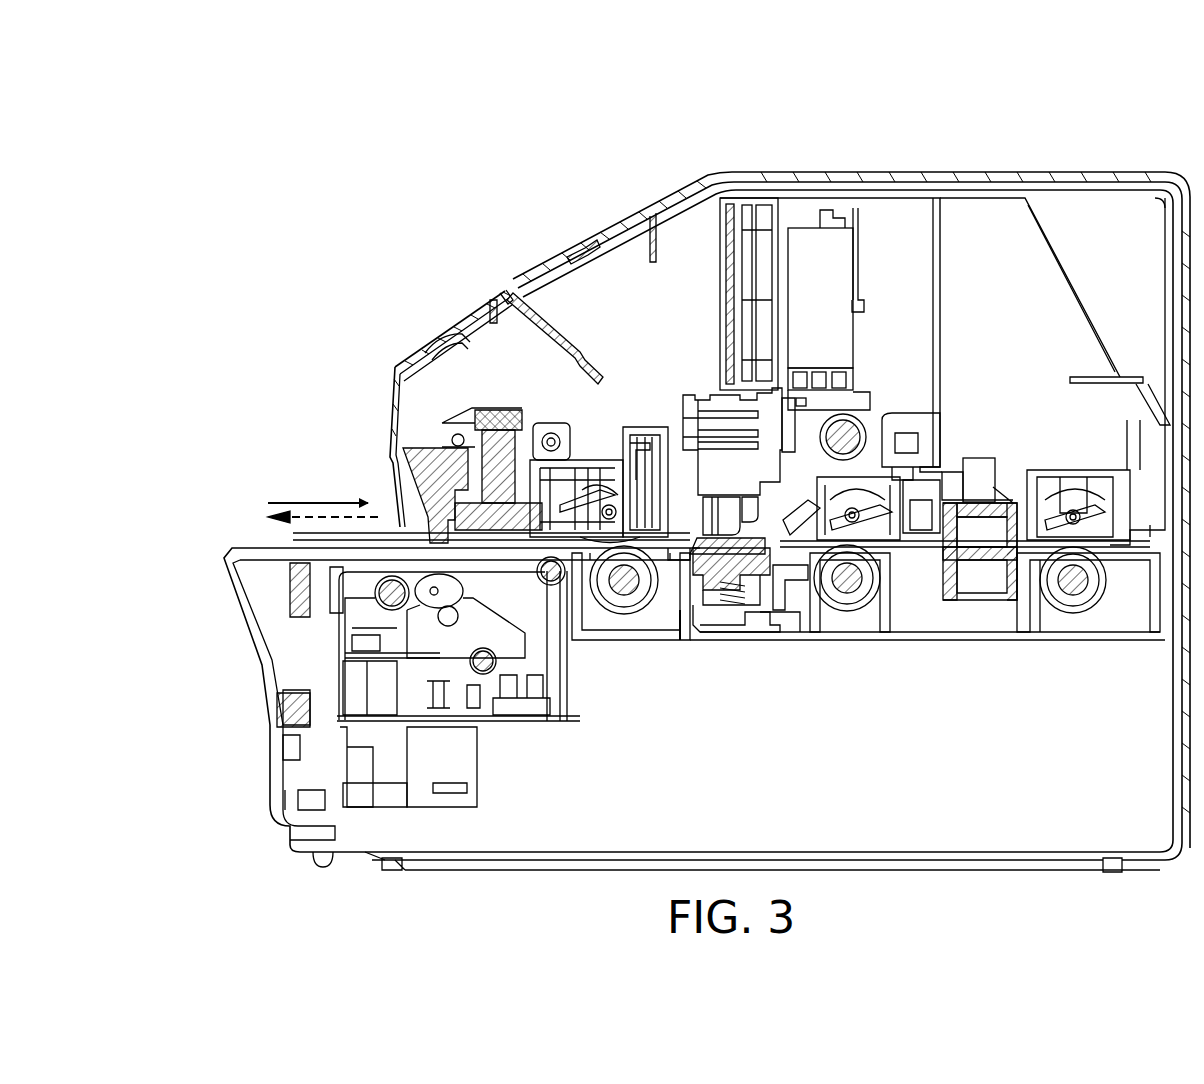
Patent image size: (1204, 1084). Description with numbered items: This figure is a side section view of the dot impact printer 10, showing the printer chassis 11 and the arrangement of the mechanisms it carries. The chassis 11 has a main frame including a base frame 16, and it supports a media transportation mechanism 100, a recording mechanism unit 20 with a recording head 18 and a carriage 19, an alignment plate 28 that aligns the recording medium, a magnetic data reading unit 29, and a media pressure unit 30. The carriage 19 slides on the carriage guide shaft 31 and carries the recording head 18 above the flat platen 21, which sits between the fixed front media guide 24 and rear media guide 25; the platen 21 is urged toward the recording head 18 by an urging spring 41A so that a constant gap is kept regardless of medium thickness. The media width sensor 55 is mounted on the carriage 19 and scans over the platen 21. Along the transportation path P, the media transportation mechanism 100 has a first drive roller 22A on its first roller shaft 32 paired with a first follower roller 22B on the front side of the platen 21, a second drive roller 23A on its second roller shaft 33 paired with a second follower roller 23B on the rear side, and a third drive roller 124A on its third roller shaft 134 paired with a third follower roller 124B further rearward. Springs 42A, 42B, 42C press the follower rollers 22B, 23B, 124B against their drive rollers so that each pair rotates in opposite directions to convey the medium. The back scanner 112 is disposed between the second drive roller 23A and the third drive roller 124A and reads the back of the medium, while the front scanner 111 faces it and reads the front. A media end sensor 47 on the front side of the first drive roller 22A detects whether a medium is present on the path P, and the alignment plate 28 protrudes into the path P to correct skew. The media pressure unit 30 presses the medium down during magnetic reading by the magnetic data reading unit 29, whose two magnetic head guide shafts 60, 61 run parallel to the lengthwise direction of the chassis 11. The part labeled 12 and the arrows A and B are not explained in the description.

The dot impact printer 10 is at (1068, 110).
The printer chassis 11 is at (1088, 272).
The housing 12 is at (1090, 172).
The base frame 16 is at (997, 602).
The recording head 18 is at (716, 400).
The carriage 19 is at (833, 378).
The recording mechanism unit 20 is at (880, 284).
The platen 21 is at (708, 628).
The first drive roller 22A is at (653, 616).
The first follower roller 22B is at (628, 468).
The second drive roller 23A is at (878, 615).
The second follower roller 23B is at (895, 502).
The front media guide 24 is at (583, 642).
The rear media guide 25 is at (1107, 565).
The alignment plate 28 is at (681, 622).
The magnetic data reading unit 29 is at (316, 630).
The media pressure unit 30 is at (404, 470).
The carriage guide shaft 31 is at (856, 428).
The first roller shaft 32 is at (618, 598).
The second roller shaft 33 is at (870, 605).
The urging spring 41A is at (757, 623).
The spring 42A is at (648, 427).
The spring 42B is at (862, 476).
The spring 42C is at (1074, 470).
The media end sensor 47 is at (553, 587).
The media width sensor 55 is at (810, 618).
The magnetic head guide shaft 60 is at (302, 723).
The magnetic head guide shaft 61 is at (490, 675).
The media transportation mechanism 100 is at (843, 655).
The front scanner 111 is at (977, 457).
The back scanner 112 is at (967, 600).
The third drive roller 124A is at (1045, 585).
The third follower roller 124B is at (1110, 500).
The third roller shaft 134 is at (1074, 598).
The transportation path P is at (922, 556).
The feed direction A is at (298, 500).
The return direction B is at (292, 520).